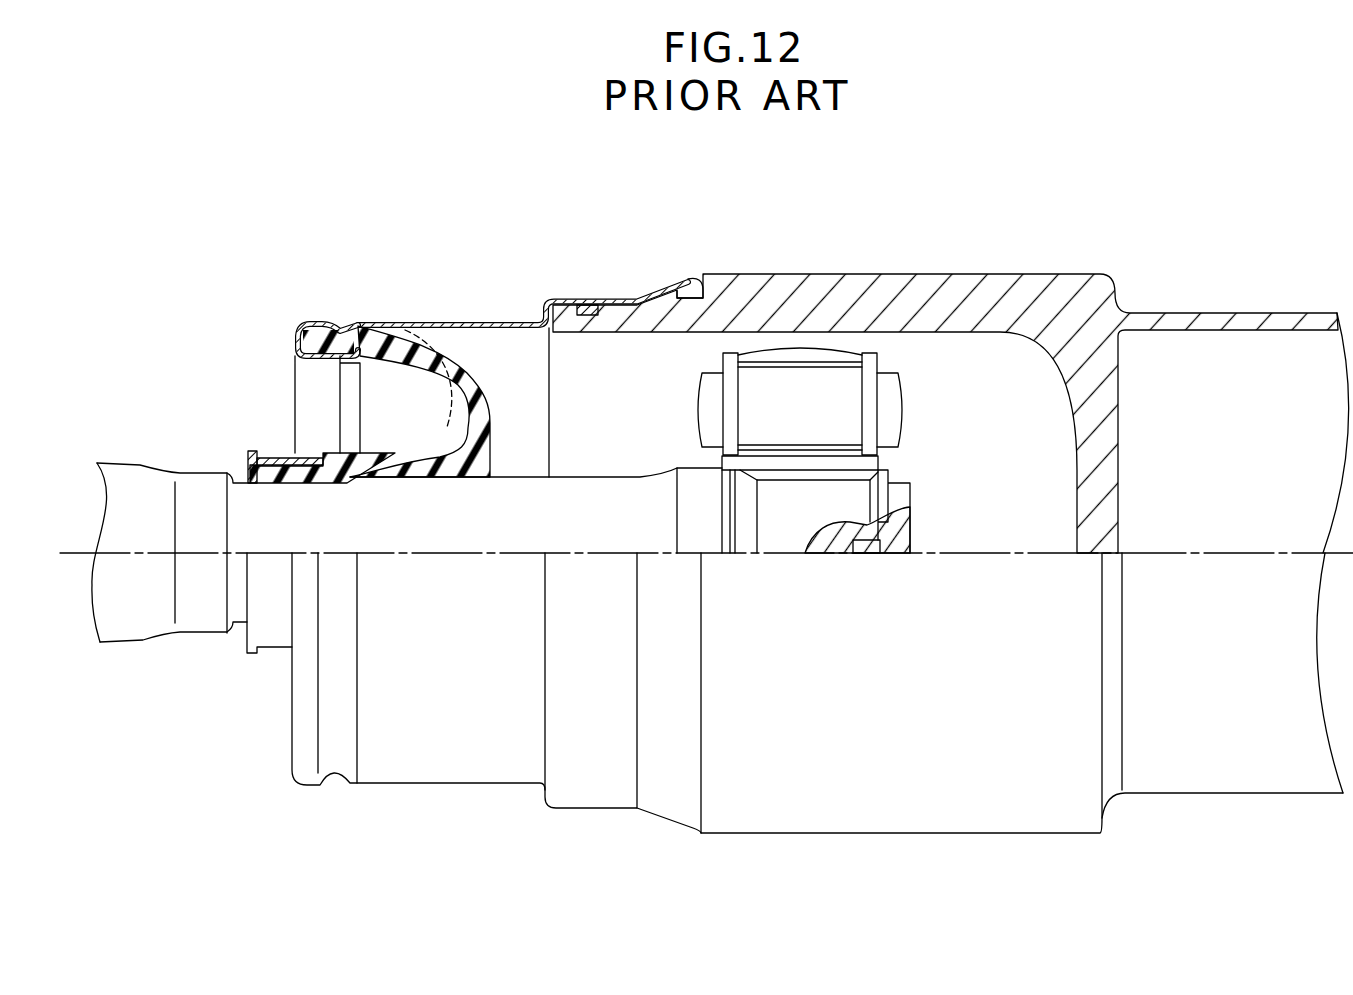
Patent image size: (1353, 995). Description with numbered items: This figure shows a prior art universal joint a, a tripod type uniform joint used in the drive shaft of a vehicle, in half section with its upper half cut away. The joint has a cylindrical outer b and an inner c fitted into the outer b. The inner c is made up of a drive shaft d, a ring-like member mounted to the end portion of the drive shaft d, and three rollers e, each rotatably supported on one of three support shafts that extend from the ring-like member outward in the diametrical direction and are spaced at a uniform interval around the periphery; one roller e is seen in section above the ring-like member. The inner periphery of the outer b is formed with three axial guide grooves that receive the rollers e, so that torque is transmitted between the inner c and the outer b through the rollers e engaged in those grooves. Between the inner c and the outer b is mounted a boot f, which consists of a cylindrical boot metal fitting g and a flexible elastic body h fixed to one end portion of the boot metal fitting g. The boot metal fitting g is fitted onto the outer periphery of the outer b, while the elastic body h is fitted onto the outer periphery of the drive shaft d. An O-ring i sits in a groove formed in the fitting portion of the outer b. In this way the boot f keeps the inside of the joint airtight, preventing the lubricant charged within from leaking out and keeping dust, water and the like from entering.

The universal joint a is at (1077, 197).
The outer b is at (911, 262).
The inner c is at (918, 478).
The drive shaft d is at (585, 493).
The roller e is at (900, 407).
The boot f is at (290, 300).
The boot metal fitting g is at (425, 323).
The elastic body h is at (395, 388).
The O-ring i is at (548, 312).